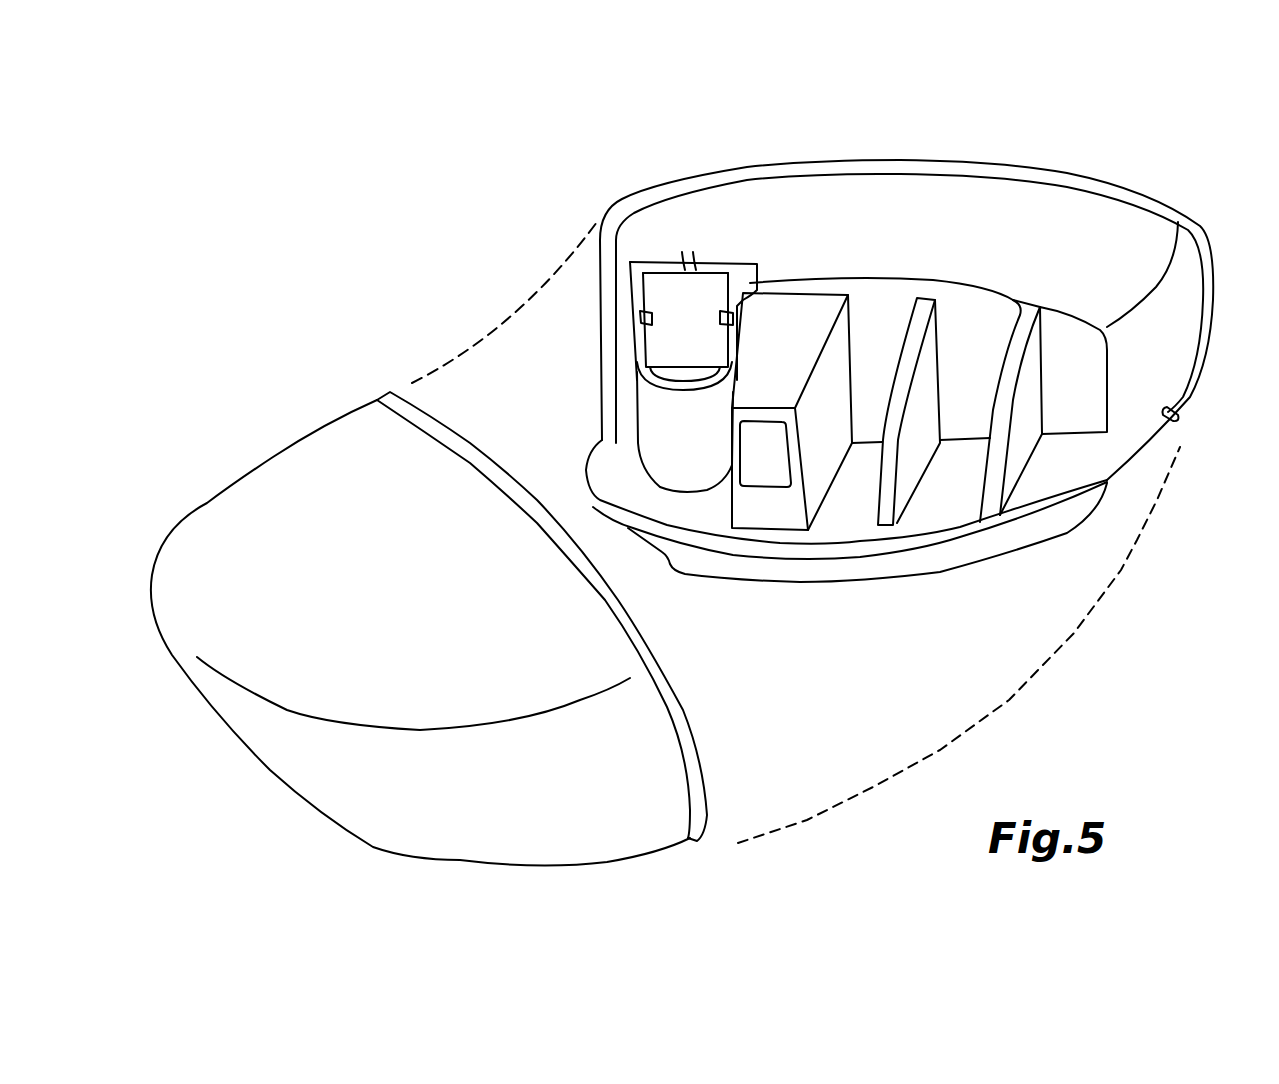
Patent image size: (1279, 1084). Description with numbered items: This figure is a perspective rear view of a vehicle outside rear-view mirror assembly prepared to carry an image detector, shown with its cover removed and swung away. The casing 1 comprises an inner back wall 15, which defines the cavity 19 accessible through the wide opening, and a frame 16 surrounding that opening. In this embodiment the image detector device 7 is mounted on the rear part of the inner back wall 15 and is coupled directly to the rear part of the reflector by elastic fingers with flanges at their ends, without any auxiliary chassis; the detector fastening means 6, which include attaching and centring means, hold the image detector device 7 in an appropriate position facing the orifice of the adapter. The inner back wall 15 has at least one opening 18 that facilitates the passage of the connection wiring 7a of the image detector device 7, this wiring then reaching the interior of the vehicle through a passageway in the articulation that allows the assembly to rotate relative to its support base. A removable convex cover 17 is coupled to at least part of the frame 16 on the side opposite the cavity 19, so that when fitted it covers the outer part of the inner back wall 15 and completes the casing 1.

The casing 1 is at (980, 548).
The detector fastening means 6 is at (640, 316).
The image detector device 7 is at (657, 333).
The connection wiring 7a is at (683, 374).
The inner back wall 15 is at (970, 310).
The frame 16 is at (1093, 190).
The removable convex cover 17 is at (258, 493).
The opening 18 is at (662, 373).
The cavity 19 is at (1122, 243).